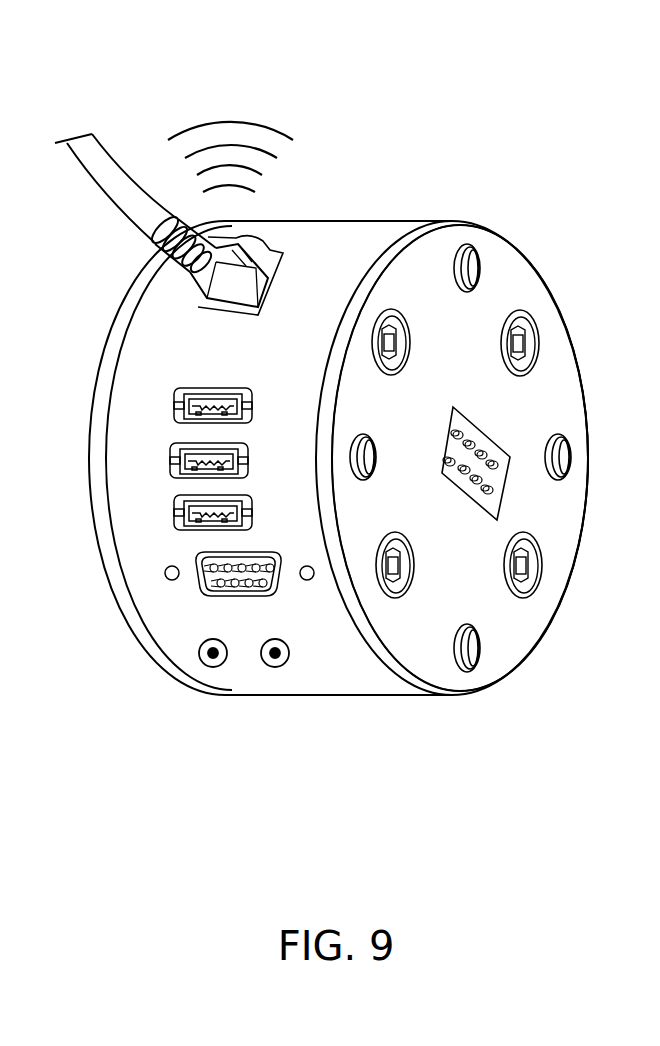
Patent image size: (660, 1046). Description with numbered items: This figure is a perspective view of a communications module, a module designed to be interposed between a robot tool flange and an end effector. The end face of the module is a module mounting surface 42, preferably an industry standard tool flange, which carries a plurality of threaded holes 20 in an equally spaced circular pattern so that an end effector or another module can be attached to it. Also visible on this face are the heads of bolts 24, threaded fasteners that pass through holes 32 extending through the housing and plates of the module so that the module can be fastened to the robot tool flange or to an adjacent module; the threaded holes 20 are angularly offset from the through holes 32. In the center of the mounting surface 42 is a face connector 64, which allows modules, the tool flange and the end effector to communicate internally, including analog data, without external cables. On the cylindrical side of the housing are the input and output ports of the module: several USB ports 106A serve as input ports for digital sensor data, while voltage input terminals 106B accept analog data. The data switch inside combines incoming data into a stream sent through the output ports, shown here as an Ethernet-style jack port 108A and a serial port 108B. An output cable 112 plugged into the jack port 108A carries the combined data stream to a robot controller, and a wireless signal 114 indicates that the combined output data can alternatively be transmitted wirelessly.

The threaded holes 20 is at (469, 244).
The bolts 24 is at (390, 374).
The holes 32 is at (407, 325).
The module mounting surface 42 is at (558, 361).
The face connector 64 is at (475, 418).
The USB port 106A is at (177, 393).
The voltage input terminals 106B is at (216, 667).
The RJ-45 port 108A is at (273, 252).
The serial port 108B is at (272, 553).
The output cable 112 is at (104, 138).
The wireless signal 114 is at (226, 92).